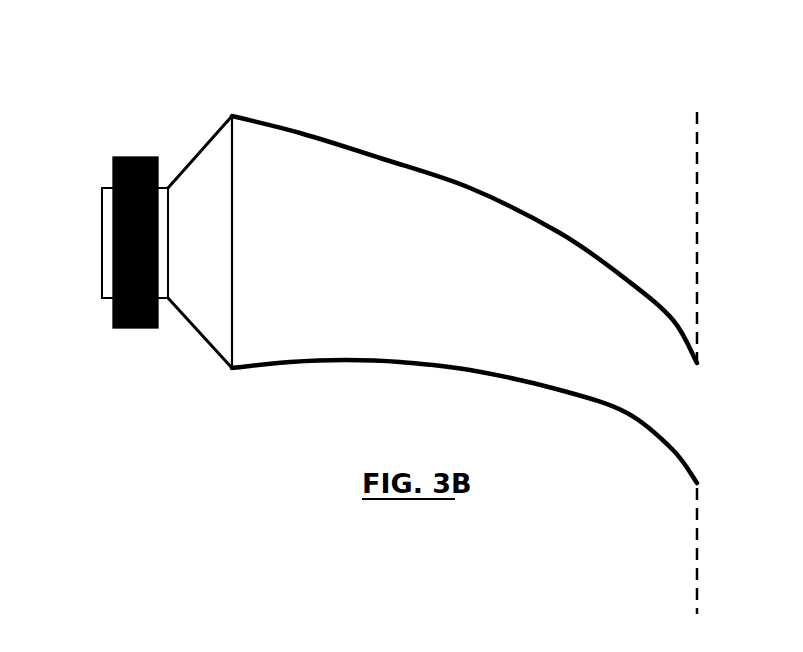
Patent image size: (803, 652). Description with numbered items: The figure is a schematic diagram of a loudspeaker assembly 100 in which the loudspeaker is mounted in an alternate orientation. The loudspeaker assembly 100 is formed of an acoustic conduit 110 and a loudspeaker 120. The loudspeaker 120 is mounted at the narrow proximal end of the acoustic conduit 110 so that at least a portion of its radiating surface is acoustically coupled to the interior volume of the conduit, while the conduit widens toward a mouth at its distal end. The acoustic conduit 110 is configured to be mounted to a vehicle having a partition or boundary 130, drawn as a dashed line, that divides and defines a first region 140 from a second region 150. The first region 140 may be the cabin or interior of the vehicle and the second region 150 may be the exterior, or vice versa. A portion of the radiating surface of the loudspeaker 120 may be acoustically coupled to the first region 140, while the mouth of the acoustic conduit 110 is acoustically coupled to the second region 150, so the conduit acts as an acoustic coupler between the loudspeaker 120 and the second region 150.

The loudspeaker assembly 100 is at (469, 92).
The acoustic conduit 110 is at (337, 371).
The loudspeaker 120 is at (102, 271).
The partition or boundary 130 is at (697, 106).
The first region 140 is at (668, 158).
The second region 150 is at (728, 158).